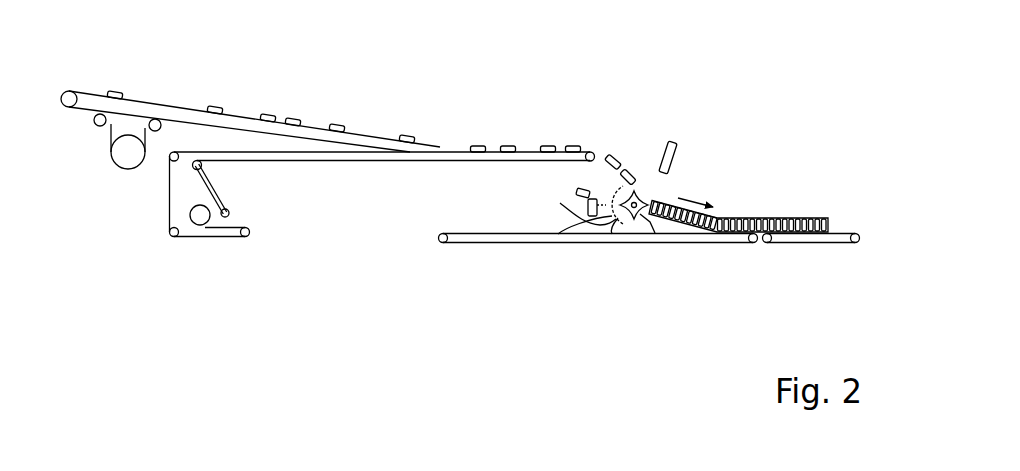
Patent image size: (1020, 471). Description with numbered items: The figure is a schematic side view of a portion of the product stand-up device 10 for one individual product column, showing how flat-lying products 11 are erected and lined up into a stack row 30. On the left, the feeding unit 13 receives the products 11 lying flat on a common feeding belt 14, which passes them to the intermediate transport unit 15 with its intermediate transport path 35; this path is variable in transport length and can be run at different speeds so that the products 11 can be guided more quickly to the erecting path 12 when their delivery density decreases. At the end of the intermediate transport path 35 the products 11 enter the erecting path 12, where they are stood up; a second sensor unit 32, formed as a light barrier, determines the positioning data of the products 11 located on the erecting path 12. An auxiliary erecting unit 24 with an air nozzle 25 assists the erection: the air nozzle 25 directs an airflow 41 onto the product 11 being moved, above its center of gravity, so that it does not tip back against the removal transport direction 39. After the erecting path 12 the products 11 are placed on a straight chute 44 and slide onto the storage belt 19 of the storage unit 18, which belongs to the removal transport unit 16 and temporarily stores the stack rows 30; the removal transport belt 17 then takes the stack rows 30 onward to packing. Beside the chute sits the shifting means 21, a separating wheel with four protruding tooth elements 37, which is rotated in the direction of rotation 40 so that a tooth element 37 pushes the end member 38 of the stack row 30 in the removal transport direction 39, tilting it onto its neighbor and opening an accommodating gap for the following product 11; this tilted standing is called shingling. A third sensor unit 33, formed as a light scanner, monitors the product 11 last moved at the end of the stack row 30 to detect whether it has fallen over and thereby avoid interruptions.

The product stand-up device 10 is at (408, 79).
The products 11 is at (266, 108).
The erecting path 12 is at (598, 152).
The feeding unit 13 is at (205, 140).
The feeding belt 14 is at (172, 117).
The intermediate transport unit 15 is at (382, 204).
The intermediate transport path 35 is at (322, 163).
The removal transport unit 16 is at (741, 249).
The removal transport belt 17 is at (807, 243).
The storage unit 18 is at (598, 289).
The storage belt 19 is at (480, 244).
The shifting means 21 is at (640, 219).
The auxiliary erecting unit 24 is at (560, 203).
The air nozzle 25 is at (588, 207).
The stack row 30 is at (668, 189).
The second sensor unit 32 is at (579, 190).
The third sensor unit 33 is at (683, 150).
The tooth element 37 is at (618, 218).
The end member 38 is at (650, 222).
The removal transport direction 39 is at (690, 197).
The direction of rotation 40 is at (639, 189).
The airflow 41 is at (558, 234).
The straight chute 44 is at (683, 230).